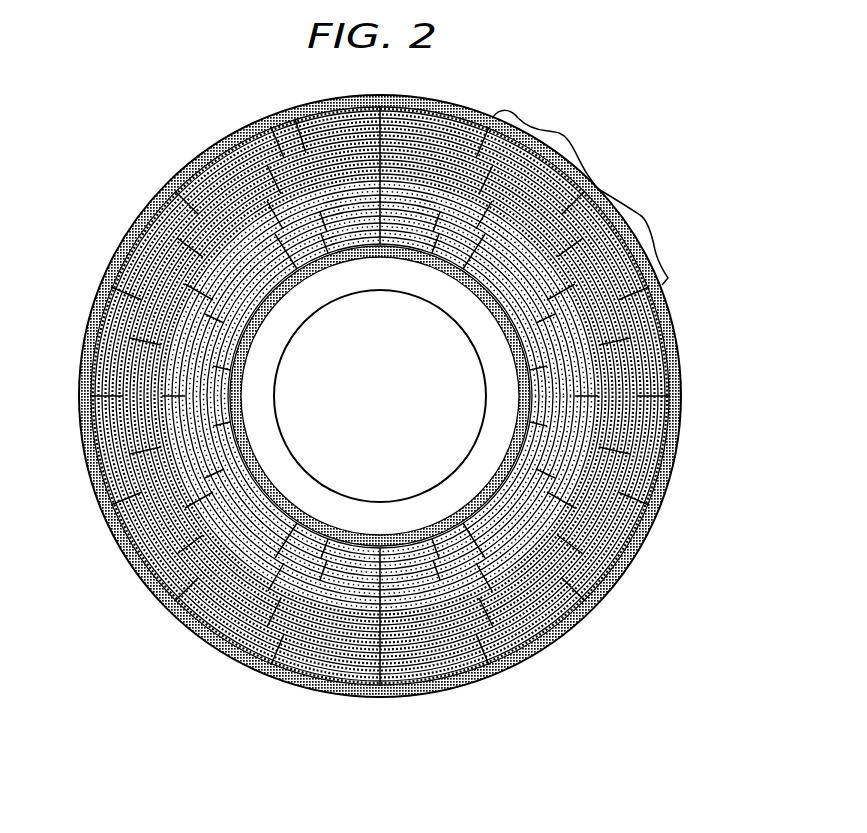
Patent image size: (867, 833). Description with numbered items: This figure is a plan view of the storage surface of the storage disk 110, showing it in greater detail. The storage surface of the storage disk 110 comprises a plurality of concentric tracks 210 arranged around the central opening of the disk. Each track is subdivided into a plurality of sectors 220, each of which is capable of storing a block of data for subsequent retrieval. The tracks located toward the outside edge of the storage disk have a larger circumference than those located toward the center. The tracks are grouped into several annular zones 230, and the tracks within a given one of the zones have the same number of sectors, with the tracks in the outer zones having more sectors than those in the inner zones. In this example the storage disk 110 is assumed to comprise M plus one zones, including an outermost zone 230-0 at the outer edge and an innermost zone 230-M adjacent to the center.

The storage disk 110 is at (132, 164).
The concentric tracks 210 is at (568, 612).
The sectors 220 is at (653, 220).
The annular zones 230 is at (607, 433).
The outermost zone 230-0 is at (275, 118).
The innermost zone 230-M is at (300, 254).